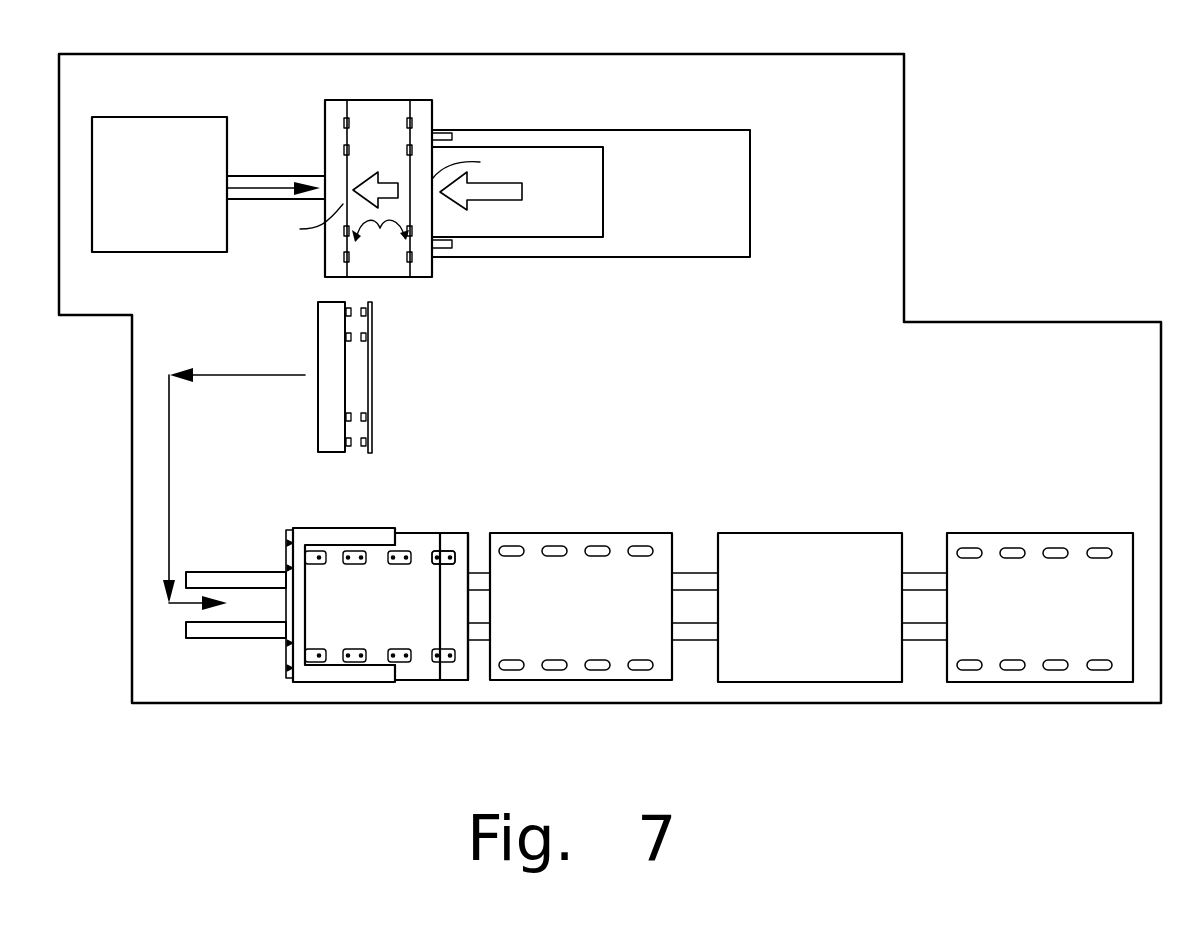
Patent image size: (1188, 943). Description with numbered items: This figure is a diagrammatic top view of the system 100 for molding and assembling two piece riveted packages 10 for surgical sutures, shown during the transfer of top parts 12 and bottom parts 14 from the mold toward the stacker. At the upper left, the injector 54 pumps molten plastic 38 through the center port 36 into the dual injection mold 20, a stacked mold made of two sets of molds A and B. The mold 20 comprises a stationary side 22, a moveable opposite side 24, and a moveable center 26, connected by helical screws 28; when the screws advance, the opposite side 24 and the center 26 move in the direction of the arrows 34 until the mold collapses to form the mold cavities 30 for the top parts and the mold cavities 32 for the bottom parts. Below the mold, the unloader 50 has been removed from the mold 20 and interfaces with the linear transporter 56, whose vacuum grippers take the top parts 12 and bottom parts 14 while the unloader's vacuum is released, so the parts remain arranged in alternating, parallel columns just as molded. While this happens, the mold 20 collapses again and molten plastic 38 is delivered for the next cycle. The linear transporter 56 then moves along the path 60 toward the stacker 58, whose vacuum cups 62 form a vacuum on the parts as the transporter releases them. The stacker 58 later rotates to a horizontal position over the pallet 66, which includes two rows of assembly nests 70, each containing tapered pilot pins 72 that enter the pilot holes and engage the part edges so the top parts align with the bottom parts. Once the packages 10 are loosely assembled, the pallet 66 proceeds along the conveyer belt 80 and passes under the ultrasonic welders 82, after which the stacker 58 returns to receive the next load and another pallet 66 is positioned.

The system 100 is at (1040, 136).
The two piece riveted package 10 is at (640, 550).
The top part 12 is at (349, 336).
The bottom part 14 is at (362, 309).
The dual injection mold 20 is at (428, 142).
The stationary side 22 is at (329, 111).
The moveable opposite side 24 is at (430, 112).
The moveable center 26 is at (403, 107).
The helical screws 28 is at (452, 246).
The mold cavities for top parts 30 is at (380, 246).
The mold cavities for bottom parts 32 is at (408, 119).
The arrows 34 is at (388, 175).
The center port 36 is at (325, 182).
The molten plastic 38 is at (253, 200).
The unloader 50 is at (371, 378).
The injector 54 is at (157, 252).
The linear transporter 56 is at (327, 399).
The stacker 58 is at (333, 532).
The path 60 is at (169, 495).
The vacuum cups 62 is at (276, 645).
The pallet 66 is at (448, 536).
The assembly nests 70 is at (443, 664).
The tapered pilot pins 72 is at (443, 566).
The conveyer belt 80 is at (234, 572).
The ultrasonic welders 82 is at (790, 545).